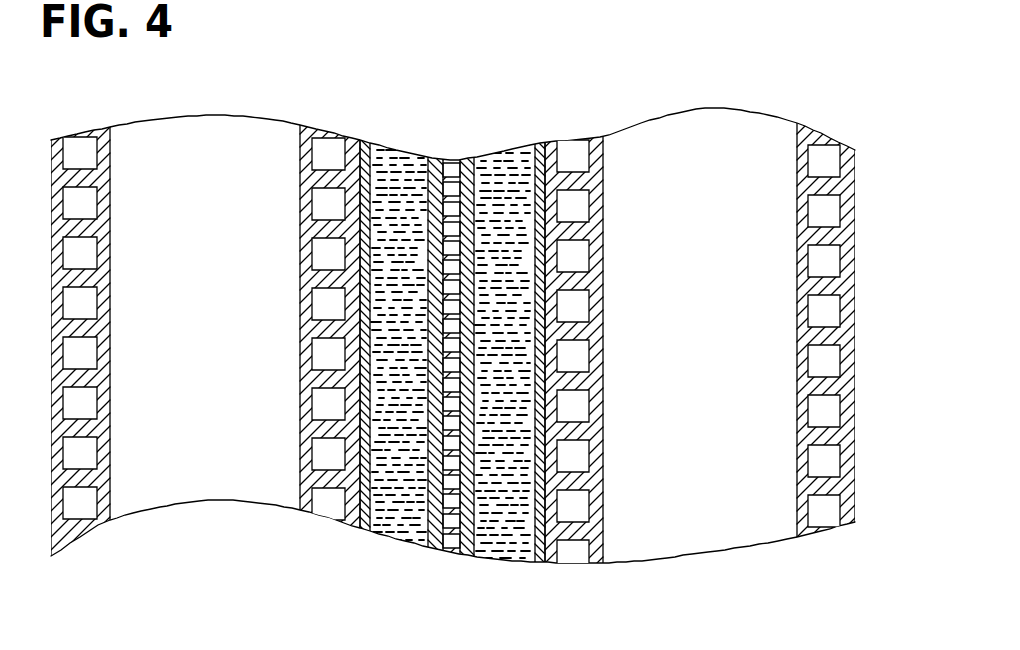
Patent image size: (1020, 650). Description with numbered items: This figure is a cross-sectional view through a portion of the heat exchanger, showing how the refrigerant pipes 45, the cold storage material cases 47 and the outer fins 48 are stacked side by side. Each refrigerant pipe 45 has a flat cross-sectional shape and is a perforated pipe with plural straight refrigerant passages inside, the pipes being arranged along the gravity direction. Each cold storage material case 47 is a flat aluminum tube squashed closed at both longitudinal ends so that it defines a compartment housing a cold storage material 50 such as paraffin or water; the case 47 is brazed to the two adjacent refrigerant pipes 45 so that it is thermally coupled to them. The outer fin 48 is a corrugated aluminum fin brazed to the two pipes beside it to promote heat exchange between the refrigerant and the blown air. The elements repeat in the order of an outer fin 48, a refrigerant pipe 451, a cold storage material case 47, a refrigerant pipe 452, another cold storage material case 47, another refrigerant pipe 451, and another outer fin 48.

The refrigerant pipe 45 is at (77, 548).
The refrigerant pipe 451 is at (305, 128).
The refrigerant pipe 452 is at (462, 168).
The cold storage material case 47 is at (363, 140).
The outer fin 48 is at (193, 137).
The cold storage material 50 is at (403, 180).